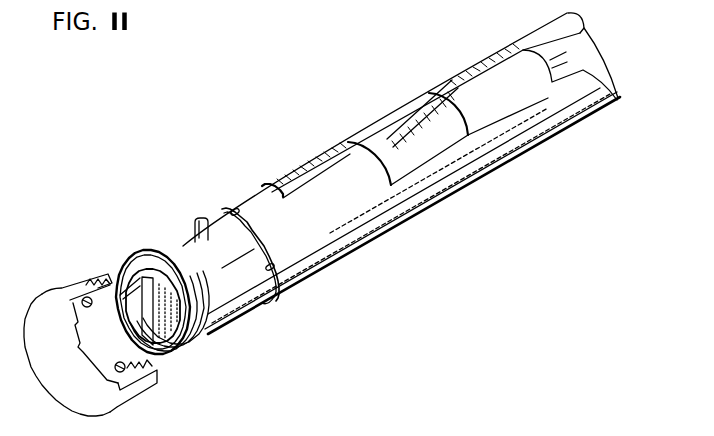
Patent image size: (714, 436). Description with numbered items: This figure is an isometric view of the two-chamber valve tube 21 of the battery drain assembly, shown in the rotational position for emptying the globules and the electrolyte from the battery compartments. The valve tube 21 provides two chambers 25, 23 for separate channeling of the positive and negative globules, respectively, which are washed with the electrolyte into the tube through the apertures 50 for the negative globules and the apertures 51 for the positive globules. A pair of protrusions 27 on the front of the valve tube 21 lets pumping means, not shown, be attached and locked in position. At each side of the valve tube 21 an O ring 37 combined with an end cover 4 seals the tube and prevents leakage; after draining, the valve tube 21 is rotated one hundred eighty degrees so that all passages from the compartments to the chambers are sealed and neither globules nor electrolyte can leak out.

The end cover 4 is at (67, 277).
The two-chamber valve tube 21 is at (366, 265).
The chamber 23 is at (133, 298).
The chamber 25 is at (168, 338).
The protrusions 27 is at (182, 213).
The O ring 37 is at (268, 303).
The apertures 50 is at (317, 170).
The apertures 51 is at (447, 130).